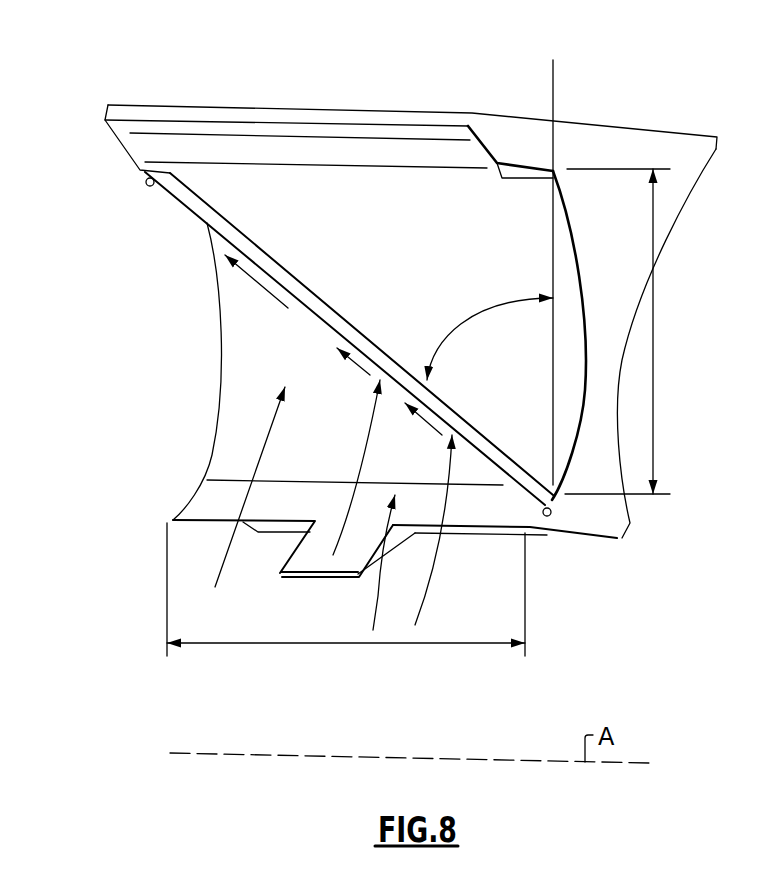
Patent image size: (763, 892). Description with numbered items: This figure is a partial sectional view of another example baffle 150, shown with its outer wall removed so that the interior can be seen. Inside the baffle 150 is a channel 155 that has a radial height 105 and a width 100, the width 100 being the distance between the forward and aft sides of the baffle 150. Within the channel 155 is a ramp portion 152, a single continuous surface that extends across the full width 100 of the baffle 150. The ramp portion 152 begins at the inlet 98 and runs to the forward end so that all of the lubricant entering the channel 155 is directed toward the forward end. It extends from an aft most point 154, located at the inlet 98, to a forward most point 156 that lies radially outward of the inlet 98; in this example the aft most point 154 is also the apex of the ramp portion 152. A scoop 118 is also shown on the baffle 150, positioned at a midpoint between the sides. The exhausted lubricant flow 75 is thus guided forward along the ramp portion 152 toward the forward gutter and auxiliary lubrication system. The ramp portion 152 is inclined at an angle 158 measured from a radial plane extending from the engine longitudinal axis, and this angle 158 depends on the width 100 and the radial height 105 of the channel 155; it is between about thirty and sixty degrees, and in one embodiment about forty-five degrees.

The baffle 150 is at (613, 76).
The second portion of exhausted lubricant flow 75 is at (237, 457).
The scoop 118 is at (313, 560).
The ramp portion 152 is at (340, 332).
The forward most point 156 is at (146, 187).
The aft most point 154 is at (552, 516).
The channel 155 is at (250, 321).
The inlet 98 is at (378, 596).
The angle 158 is at (463, 316).
The height 105 is at (655, 387).
The width 100 is at (267, 649).